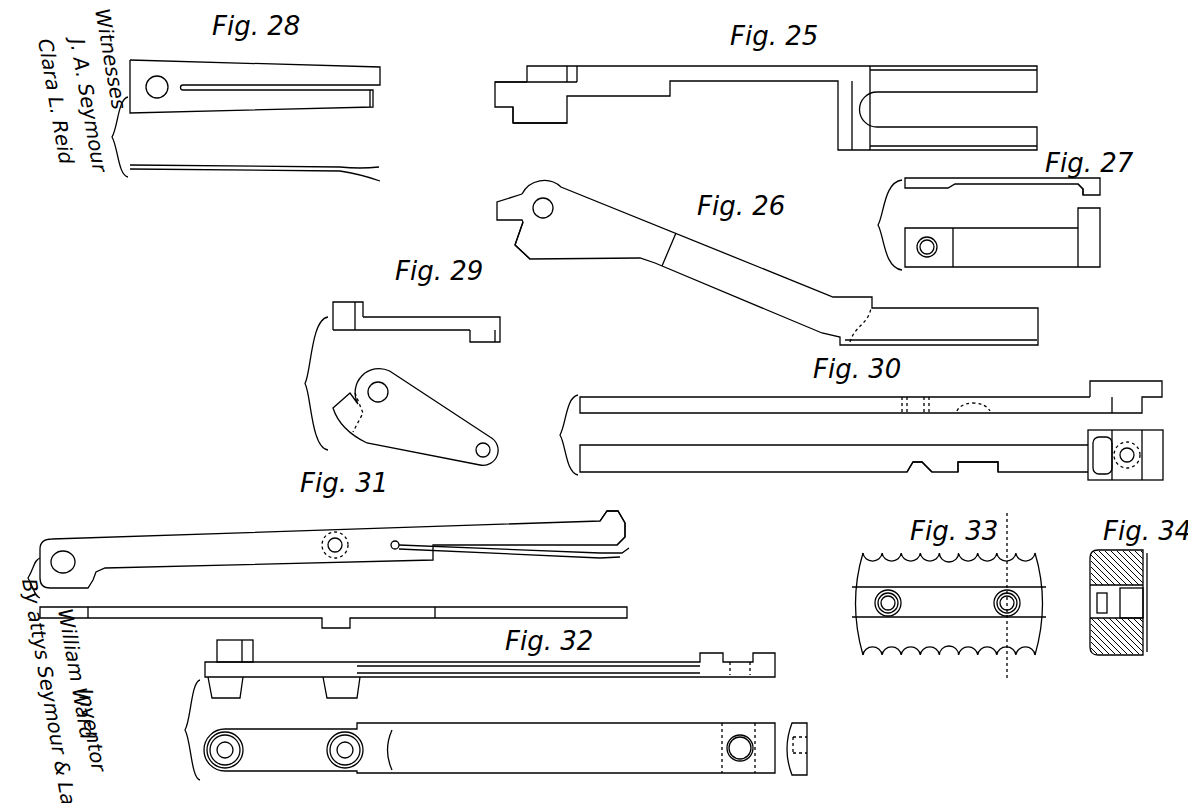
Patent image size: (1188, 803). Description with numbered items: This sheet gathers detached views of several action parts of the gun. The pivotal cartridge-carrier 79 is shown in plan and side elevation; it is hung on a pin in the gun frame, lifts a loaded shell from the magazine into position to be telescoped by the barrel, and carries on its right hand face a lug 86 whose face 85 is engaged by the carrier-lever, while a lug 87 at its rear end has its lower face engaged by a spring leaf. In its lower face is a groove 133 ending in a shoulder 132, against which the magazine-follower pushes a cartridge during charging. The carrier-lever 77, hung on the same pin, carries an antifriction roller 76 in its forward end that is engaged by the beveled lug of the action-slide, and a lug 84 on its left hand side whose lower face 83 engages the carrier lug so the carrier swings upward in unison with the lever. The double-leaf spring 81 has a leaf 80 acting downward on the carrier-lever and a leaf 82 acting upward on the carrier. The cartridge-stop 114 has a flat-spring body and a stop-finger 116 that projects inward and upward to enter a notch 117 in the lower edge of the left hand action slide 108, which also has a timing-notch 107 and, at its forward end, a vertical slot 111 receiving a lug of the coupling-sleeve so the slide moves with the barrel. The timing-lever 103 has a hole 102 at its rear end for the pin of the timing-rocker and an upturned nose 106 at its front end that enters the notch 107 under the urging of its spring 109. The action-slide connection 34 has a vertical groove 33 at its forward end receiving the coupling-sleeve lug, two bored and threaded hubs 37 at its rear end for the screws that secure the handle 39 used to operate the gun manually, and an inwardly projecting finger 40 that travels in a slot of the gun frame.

In FIG. 32, the vertical groove 33 is at (738, 655).
In FIG. 32, the action-slide connection 34 is at (458, 662).
In FIG. 32, the hubs 37 is at (241, 689).
In FIG. 33, the handle 39 is at (1040, 574).
In FIG. 34, the handle 39 is at (1118, 602).
In FIG. 32, the finger 40 is at (217, 648).
In FIG. 29, the antifriction roller 76 is at (501, 332).
In FIG. 29, the carrier-lever 77 is at (415, 318).
In FIG. 25, the pivotal cartridge-carrier 79 is at (766, 108).
In FIG. 26, the pivotal cartridge-carrier 79 is at (776, 263).
In FIG. 28, the leaf 80 is at (345, 168).
In FIG. 28, the double-leaf spring 81 is at (170, 72).
In FIG. 28, the leaf 82 is at (255, 72).
In FIG. 29, the lower face 83 is at (366, 318).
In FIG. 29, the lug 84 is at (346, 303).
In FIG. 25, the face 85 is at (512, 118).
In FIG. 26, the face 85 is at (520, 232).
In FIG. 25, the lug 86 is at (542, 121).
In FIG. 26, the lug 86 is at (531, 245).
In FIG. 25, the lug 87 is at (504, 90).
In FIG. 26, the lug 87 is at (510, 208).
In FIG. 31, the hole 102 is at (65, 551).
In FIG. 31, the timing-lever 103 is at (274, 615).
In FIG. 31, the nose 106 is at (623, 523).
In FIG. 30, the notch 107 is at (915, 466).
In FIG. 30, the left hand action slide 108 is at (835, 434).
In FIG. 31, the spring 109 is at (518, 552).
In FIG. 30, the vertical slot 111 is at (1142, 424).
In FIG. 27, the cartridge-stop 114 is at (993, 183).
In FIG. 27, the stop-finger 116 is at (1085, 188).
In FIG. 30, the notch 117 is at (972, 402).
In FIG. 25, the shoulder 132 is at (860, 116).
In FIG. 26, the shoulder 132 is at (866, 303).
In FIG. 25, the groove 133 is at (953, 108).